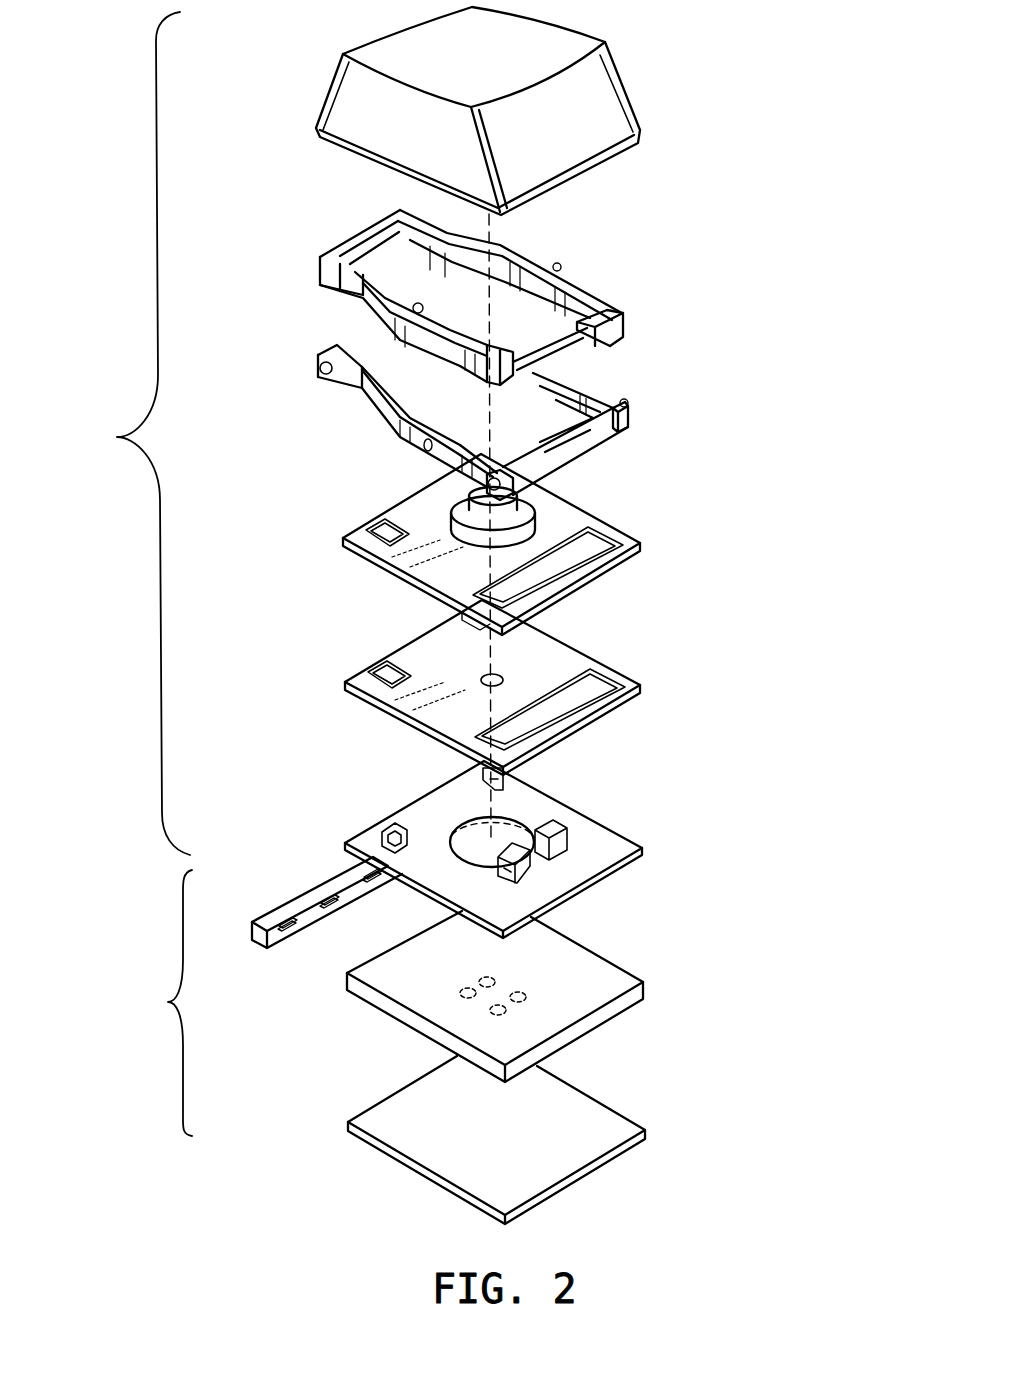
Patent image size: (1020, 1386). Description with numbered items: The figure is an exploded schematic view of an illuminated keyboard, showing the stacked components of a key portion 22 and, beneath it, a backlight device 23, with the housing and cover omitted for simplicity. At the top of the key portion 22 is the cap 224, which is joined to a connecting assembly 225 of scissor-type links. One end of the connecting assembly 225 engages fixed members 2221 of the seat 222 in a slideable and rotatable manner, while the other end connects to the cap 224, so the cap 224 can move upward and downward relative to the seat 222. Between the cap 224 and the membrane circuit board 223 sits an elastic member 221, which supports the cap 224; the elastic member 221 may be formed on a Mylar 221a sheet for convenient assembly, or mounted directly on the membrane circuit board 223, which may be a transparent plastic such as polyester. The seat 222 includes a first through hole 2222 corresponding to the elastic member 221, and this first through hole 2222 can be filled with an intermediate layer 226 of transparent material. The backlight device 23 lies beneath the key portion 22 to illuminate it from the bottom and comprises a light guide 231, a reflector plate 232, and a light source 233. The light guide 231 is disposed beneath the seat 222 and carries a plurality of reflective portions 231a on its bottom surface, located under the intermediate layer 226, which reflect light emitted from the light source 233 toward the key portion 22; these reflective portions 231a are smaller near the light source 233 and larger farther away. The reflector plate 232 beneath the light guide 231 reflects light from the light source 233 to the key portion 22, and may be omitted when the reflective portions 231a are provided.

The key portion 22 is at (137, 433).
The backlight device 23 is at (164, 1003).
The cap 224 is at (567, 152).
The connecting assembly 225 is at (308, 348).
The elastic member 221 is at (533, 502).
The Mylar 221a is at (625, 540).
The membrane circuit board 223 is at (628, 680).
The seat 222 is at (463, 847).
The first through hole 2222 is at (512, 837).
The intermediate layer 226 is at (586, 811).
The fixed members 2221 is at (487, 776).
The light source 233 is at (288, 915).
The light guide 231 is at (485, 996).
The reflective portions 231a is at (520, 997).
The reflector plate 232 is at (352, 1122).